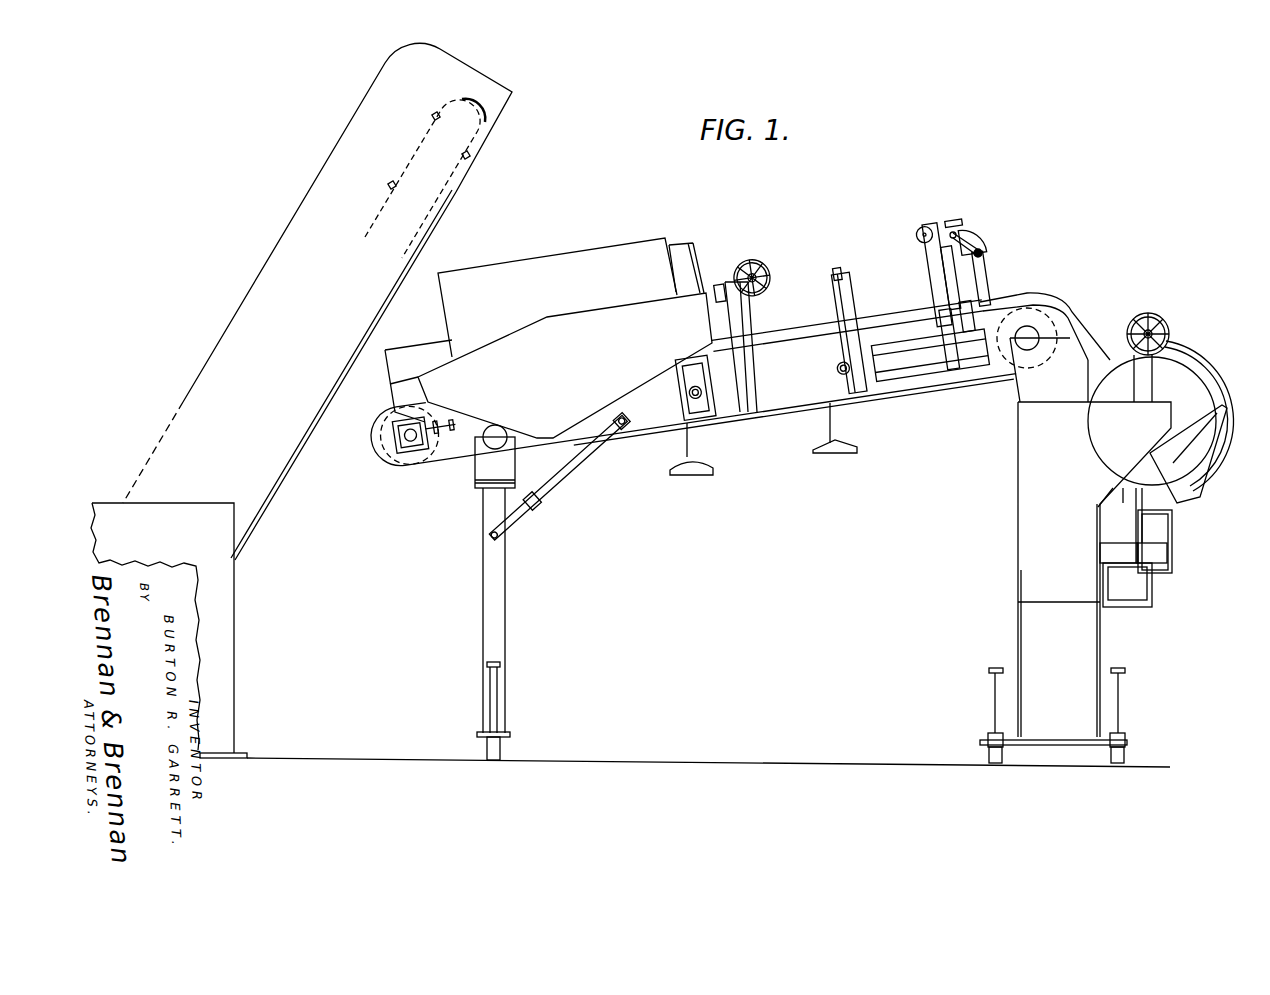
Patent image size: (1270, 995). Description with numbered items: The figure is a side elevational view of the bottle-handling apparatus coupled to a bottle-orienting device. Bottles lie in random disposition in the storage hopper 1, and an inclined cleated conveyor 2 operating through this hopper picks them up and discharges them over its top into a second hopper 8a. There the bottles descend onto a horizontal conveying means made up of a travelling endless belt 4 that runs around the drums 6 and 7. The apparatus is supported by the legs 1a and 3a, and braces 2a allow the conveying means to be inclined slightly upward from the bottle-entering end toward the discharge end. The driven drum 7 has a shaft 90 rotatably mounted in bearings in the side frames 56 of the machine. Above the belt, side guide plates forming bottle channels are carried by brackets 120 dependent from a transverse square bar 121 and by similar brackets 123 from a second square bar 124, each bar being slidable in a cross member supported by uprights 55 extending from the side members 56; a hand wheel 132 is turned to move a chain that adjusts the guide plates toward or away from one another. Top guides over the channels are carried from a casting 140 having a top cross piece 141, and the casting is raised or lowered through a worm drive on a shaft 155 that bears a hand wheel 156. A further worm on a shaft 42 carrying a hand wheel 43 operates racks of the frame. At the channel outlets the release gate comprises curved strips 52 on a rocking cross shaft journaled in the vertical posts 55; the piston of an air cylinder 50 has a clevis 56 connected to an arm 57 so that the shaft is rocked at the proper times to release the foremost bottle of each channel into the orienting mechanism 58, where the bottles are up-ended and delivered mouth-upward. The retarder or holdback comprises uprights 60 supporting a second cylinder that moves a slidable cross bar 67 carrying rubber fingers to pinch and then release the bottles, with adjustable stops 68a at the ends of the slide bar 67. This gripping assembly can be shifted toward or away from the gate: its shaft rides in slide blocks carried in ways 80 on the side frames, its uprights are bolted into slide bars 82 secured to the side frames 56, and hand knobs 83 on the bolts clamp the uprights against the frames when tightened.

The storage hopper 1 is at (237, 607).
The legs 1a is at (505, 603).
The inclined cleated conveyor 2 is at (388, 198).
The braces 2a is at (575, 462).
The legs 3a is at (1018, 534).
The travelling endless belt 4 is at (450, 470).
The roller or drum 6 is at (378, 458).
The driven drum 7 is at (1053, 358).
The second hopper 8a is at (553, 268).
The shaft 42 is at (690, 437).
The hand wheel 43 is at (702, 473).
The air cylinder 50 is at (985, 270).
The curved strips 52 is at (972, 226).
The uprights 55 is at (957, 222).
The side frames 56 is at (398, 455).
The arm 57 is at (980, 240).
The orienting mechanism 58 is at (1196, 385).
The upright 60 is at (937, 272).
The slidable cross bar 67 is at (935, 248).
The adjustable stops 68a is at (925, 230).
The ways 80 is at (920, 372).
The slide bars 82 is at (902, 330).
The hand knobs 83 is at (950, 375).
The shaft 90 is at (1035, 325).
The brackets 120 is at (712, 326).
The transverse square bar 121 is at (720, 285).
The brackets 123 is at (756, 332).
The second square bar 124 is at (762, 268).
The hand wheel 132 is at (775, 277).
The casting 140 is at (858, 281).
The top cross piece 141 is at (842, 272).
The shaft 155 is at (836, 421).
The hand wheel 156 is at (842, 450).